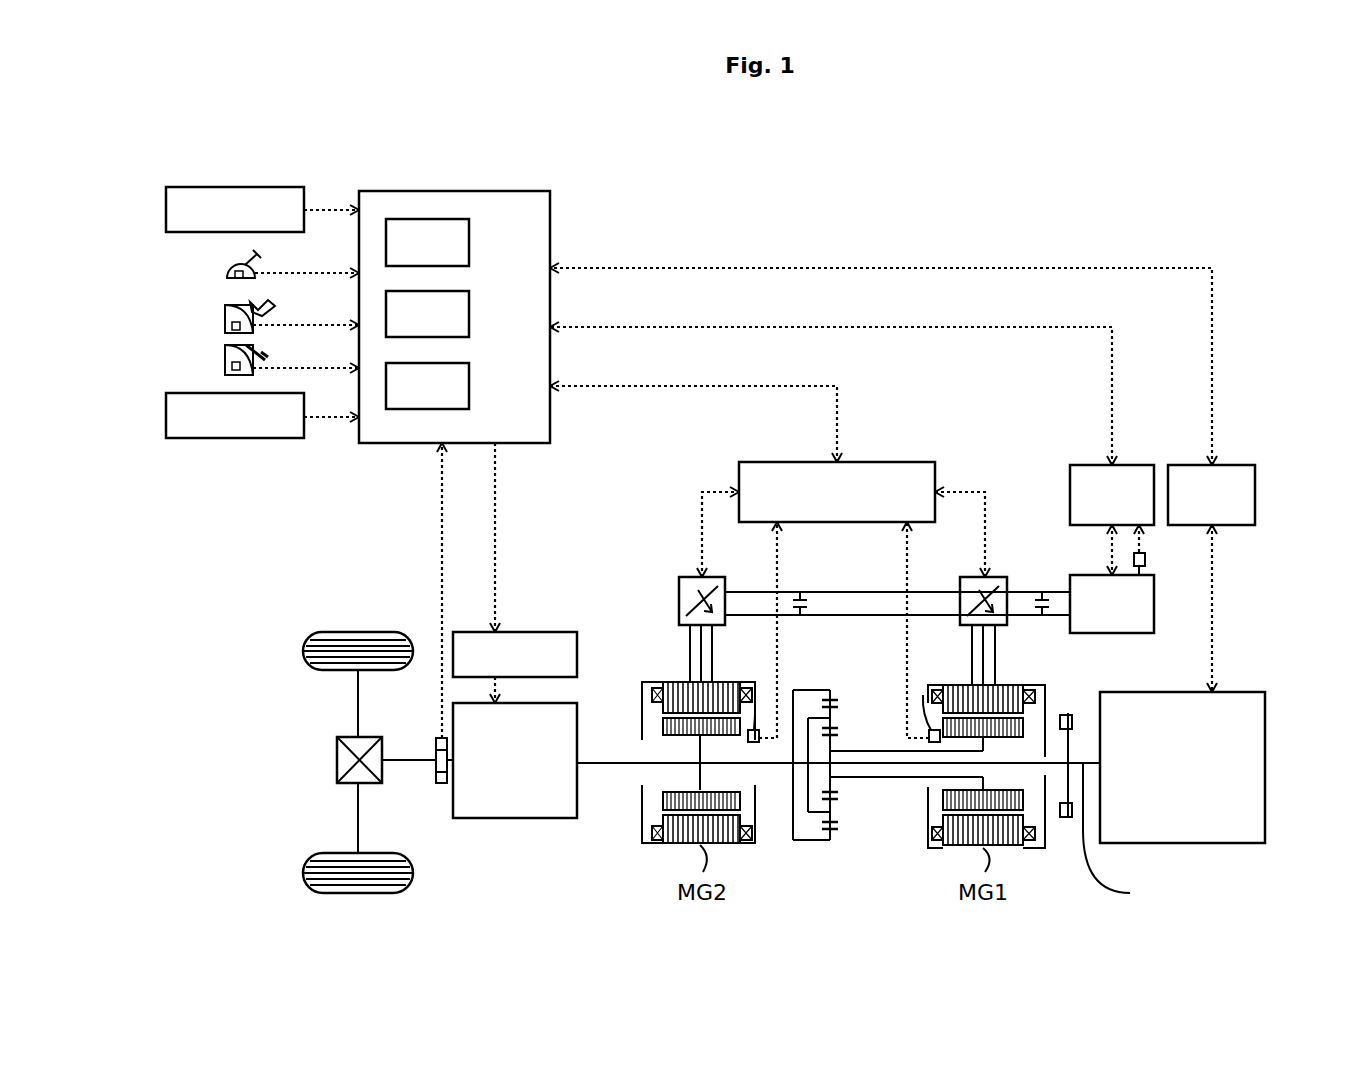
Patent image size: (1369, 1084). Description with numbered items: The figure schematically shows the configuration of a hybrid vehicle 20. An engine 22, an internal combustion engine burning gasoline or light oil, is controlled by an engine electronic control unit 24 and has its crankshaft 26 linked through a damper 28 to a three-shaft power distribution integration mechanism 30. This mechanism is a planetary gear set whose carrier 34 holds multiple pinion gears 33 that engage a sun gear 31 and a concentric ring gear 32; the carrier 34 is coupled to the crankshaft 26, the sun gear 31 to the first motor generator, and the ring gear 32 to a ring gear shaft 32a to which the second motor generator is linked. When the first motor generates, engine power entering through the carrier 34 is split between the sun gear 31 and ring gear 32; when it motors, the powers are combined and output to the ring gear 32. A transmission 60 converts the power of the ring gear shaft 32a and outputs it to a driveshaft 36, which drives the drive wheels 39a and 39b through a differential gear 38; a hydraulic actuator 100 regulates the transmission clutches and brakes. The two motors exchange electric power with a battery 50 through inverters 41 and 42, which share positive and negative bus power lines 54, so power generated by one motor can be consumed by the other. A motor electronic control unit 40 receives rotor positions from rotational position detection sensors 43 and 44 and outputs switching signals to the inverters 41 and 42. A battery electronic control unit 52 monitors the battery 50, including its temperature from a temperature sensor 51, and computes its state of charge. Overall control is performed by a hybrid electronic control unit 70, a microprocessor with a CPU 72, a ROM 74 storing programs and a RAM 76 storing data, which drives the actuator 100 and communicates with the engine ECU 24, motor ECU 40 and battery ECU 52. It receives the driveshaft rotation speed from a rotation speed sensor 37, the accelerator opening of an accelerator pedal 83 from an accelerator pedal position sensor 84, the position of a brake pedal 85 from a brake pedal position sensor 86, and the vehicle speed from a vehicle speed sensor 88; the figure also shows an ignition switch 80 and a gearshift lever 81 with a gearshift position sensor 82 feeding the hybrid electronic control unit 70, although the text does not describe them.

The hybrid vehicle 20 is at (1063, 212).
The engine 22 is at (1265, 752).
The engine electronic control unit 24 is at (1232, 465).
The crankshaft 26 is at (987, 835).
The damper 28 is at (1067, 822).
The power distribution integration mechanism 30 is at (888, 750).
The sun gear 31 is at (836, 782).
The ring gear 32 is at (836, 832).
The ring gear shaft 32a is at (770, 765).
The pinion gears 33 is at (836, 807).
The carrier 34 is at (818, 717).
The driveshaft 36 is at (405, 763).
The rotation speed sensor 37 is at (442, 783).
The differential gear 38 is at (337, 760).
The drive wheel 39a is at (357, 632).
The drive wheel 39b is at (358, 893).
The motor electronic control unit 40 is at (878, 462).
The inverter 41 is at (1003, 578).
The inverter 42 is at (712, 578).
The rotational position detection sensor 43 is at (920, 688).
The rotational position detection sensor 44 is at (757, 688).
The battery 50 is at (1112, 633).
The temperature sensor 51 is at (1147, 557).
The battery electronic control unit 52 is at (1085, 465).
The power lines 54 is at (827, 606).
The transmission 60 is at (517, 818).
The hybrid electronic control unit 70 is at (453, 191).
The CPU 72 is at (469, 243).
The ROM 74 is at (469, 316).
The RAM 76 is at (469, 388).
The ignition switch 80 is at (166, 210).
The gearshift lever 81 is at (252, 257).
The gearshift position sensor 82 is at (228, 272).
The accelerator pedal 83 is at (252, 304).
The accelerator pedal position sensor 84 is at (225, 326).
The brake pedal 85 is at (250, 346).
The brake pedal position sensor 86 is at (225, 370).
The vehicle speed sensor 88 is at (166, 416).
The hydraulic actuator 100 is at (540, 632).